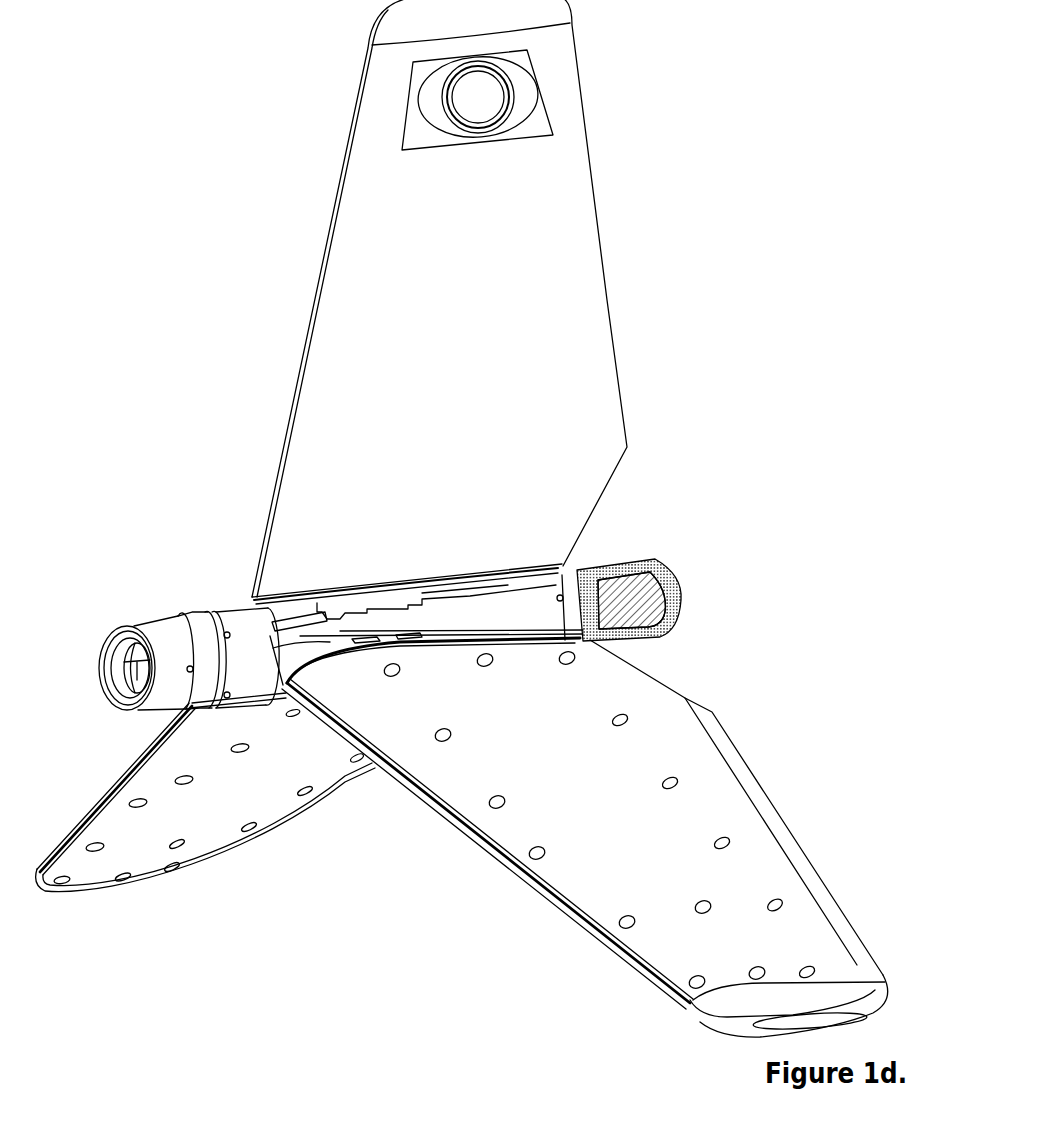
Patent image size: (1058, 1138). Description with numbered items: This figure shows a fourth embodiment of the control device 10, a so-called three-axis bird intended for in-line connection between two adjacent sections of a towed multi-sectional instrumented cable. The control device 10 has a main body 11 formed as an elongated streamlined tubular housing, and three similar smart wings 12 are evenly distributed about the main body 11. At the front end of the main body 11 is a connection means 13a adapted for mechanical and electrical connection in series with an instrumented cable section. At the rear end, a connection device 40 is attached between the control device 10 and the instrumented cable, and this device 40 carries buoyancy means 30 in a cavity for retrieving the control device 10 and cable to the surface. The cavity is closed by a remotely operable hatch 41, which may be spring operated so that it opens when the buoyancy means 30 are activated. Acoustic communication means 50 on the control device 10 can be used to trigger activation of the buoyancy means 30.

The control device 10 is at (212, 239).
The main body 11 is at (324, 576).
The wings 12 is at (570, 238).
The connection means 13a is at (137, 602).
The buoyancy means 30 is at (665, 569).
The connection device 40 is at (620, 569).
The hatch 41 is at (644, 592).
The acoustic communication means 50 is at (565, 91).